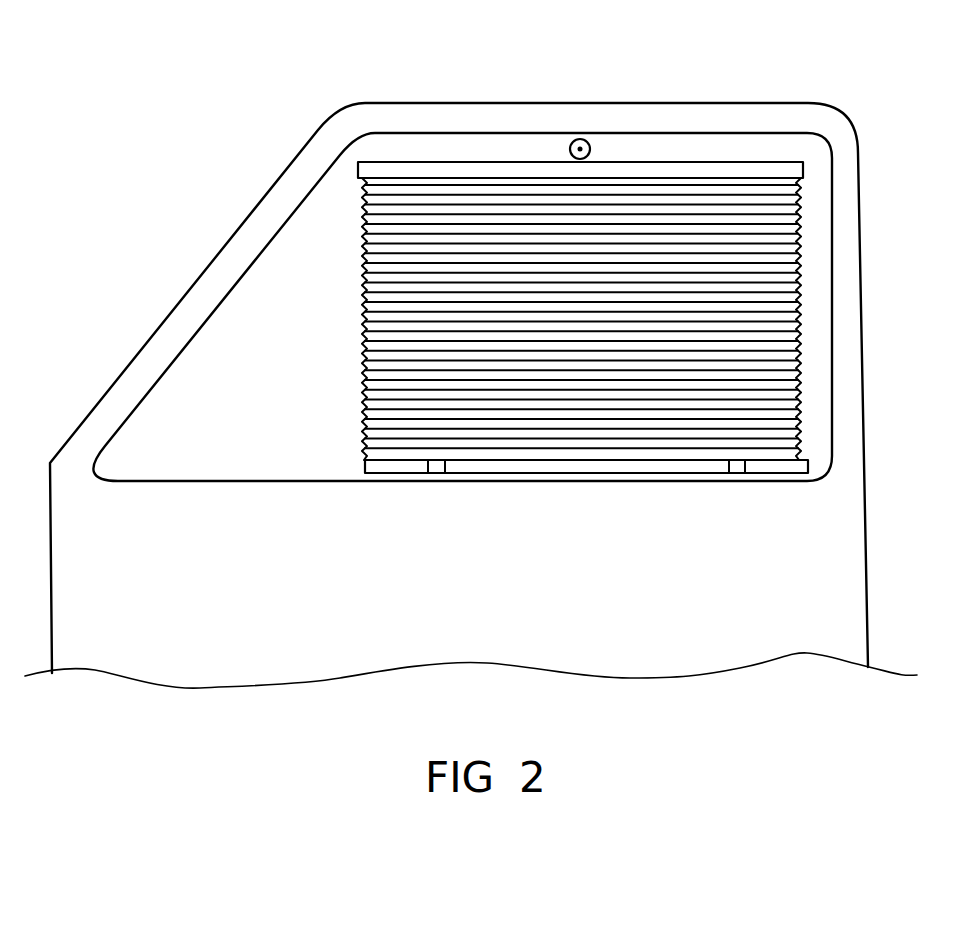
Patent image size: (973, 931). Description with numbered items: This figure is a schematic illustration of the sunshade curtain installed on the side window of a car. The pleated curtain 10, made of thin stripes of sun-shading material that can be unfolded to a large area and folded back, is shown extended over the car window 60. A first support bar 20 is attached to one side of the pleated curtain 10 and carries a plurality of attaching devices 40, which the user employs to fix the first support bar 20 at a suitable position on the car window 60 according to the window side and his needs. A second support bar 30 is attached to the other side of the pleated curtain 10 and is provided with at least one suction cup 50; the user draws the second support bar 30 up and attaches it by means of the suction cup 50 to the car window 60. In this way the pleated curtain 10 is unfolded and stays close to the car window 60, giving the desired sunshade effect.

The pleated curtain 10 is at (775, 298).
The first support bar 20 is at (565, 468).
The second support bar 30 is at (690, 165).
The attaching devices 40 is at (435, 472).
The suction cup 50 is at (573, 140).
The car window 60 is at (257, 327).